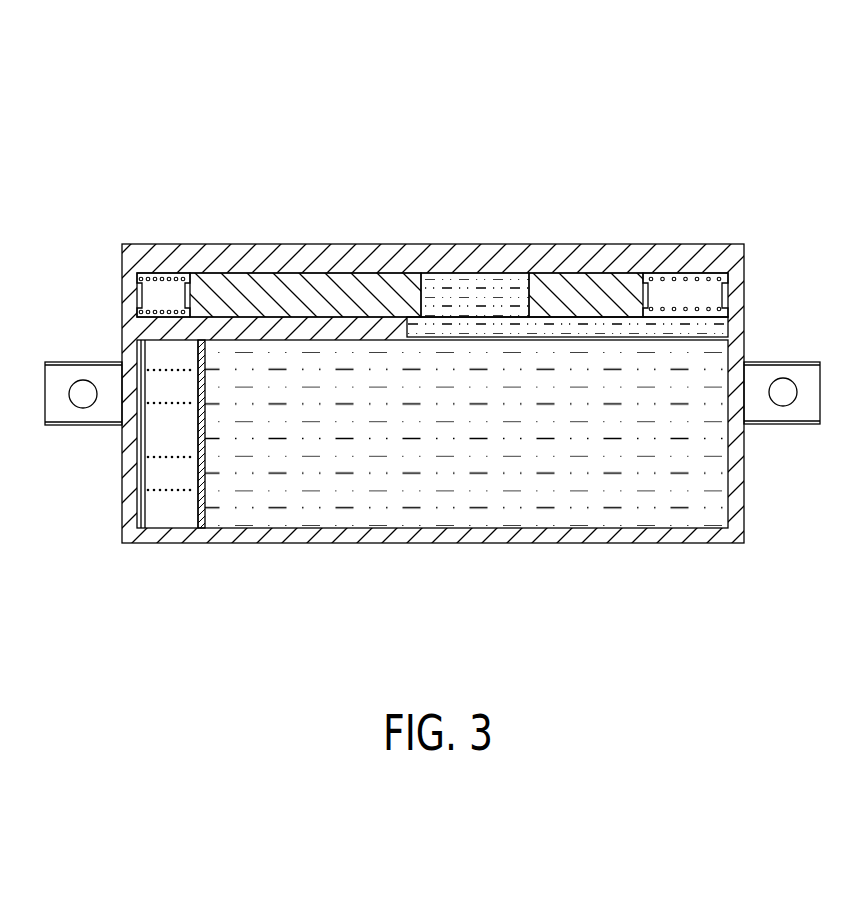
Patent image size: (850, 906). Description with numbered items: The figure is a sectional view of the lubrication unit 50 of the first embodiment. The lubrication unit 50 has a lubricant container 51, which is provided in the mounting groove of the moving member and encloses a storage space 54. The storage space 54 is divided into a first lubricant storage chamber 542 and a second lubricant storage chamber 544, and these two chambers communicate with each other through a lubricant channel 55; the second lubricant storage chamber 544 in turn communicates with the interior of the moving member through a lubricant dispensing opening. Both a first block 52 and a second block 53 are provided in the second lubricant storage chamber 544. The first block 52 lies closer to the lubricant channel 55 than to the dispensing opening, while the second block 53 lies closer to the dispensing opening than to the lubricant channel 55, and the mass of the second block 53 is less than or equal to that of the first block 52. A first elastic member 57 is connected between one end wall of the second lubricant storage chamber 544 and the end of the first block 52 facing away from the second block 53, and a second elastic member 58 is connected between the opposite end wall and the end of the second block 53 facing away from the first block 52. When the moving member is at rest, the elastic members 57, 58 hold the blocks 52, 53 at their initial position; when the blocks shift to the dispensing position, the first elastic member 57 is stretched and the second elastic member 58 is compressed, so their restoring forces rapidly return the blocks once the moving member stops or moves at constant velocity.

The lubrication unit 50 is at (746, 129).
The lubricant container 51 is at (740, 505).
The first block 52 is at (285, 293).
The second block 53 is at (586, 285).
The storage space 54 is at (434, 467).
The first lubricant storage chamber 542 is at (490, 440).
The second lubricant storage chamber 544 is at (463, 298).
The lubricant channel 55 is at (612, 325).
The first elastic member 57 is at (172, 280).
The second elastic member 58 is at (690, 280).